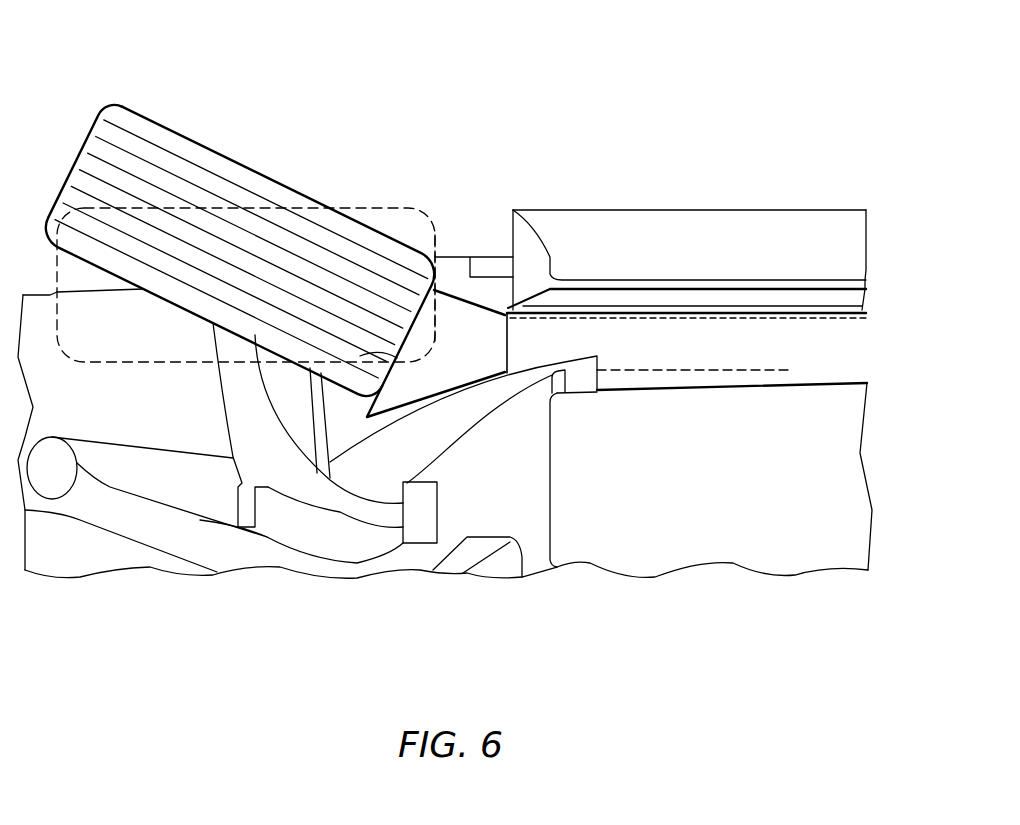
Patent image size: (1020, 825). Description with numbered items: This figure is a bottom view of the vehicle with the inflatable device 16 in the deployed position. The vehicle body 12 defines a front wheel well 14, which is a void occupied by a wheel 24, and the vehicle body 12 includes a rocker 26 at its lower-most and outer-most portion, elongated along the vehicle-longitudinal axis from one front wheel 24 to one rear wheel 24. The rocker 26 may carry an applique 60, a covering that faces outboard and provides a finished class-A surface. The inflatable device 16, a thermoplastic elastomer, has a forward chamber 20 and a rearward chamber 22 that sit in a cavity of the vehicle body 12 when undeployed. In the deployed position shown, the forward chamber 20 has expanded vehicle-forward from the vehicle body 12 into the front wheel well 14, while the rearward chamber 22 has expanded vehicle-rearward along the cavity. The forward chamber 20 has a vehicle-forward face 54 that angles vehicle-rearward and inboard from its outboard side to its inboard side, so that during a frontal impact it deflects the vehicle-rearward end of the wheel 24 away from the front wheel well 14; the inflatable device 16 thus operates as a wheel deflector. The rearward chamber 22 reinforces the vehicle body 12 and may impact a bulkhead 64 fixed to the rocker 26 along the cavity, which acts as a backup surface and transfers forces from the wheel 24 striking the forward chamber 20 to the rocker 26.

The vehicle body 12 is at (768, 170).
The front wheel well 14 is at (462, 222).
The inflatable device 16 is at (407, 325).
The forward chamber 20 is at (443, 370).
The rearward chamber 22 is at (707, 372).
The wheel 24 is at (202, 140).
The rocker 26 is at (638, 308).
The vehicle-forward face 54 is at (365, 352).
The applique 60 is at (707, 210).
The bulkhead 64 is at (790, 370).